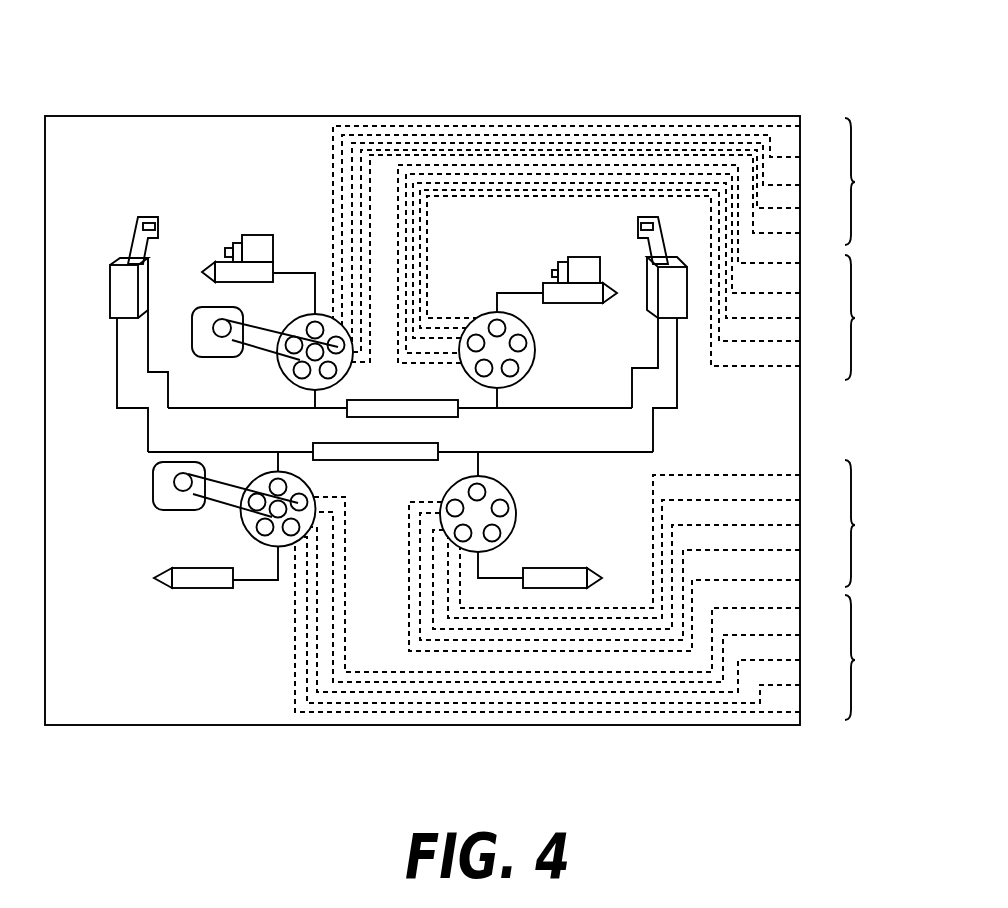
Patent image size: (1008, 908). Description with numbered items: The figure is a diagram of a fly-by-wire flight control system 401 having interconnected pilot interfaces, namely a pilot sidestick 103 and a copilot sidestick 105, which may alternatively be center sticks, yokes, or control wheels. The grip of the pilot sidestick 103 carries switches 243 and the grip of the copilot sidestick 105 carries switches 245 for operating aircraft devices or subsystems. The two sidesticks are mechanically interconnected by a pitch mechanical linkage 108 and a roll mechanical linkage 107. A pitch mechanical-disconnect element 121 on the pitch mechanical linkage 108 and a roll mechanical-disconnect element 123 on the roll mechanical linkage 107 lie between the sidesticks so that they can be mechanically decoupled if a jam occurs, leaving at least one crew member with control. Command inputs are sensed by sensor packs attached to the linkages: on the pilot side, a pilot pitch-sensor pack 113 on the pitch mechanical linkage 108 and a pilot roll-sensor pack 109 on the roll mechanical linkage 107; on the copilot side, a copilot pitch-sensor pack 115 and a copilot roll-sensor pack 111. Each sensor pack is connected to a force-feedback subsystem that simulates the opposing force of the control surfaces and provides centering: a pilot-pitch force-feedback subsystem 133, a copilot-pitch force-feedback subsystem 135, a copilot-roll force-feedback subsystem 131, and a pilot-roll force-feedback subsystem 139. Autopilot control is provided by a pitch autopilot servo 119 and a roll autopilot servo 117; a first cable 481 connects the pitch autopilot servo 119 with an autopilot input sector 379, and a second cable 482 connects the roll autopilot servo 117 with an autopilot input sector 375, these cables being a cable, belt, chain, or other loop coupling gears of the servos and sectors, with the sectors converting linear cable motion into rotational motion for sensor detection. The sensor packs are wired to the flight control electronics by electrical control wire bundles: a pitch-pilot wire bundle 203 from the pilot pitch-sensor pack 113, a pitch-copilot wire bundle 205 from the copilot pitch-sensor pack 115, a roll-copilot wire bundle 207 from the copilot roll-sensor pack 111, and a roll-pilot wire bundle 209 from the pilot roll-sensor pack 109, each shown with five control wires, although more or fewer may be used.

The fly-by-wire flight control system 401 is at (166, 84).
The pilot sidestick 103 is at (138, 242).
The switches 243 is at (150, 218).
The pilot-pitch force-feedback subsystem 133 is at (220, 235).
The pilot pitch-sensor pack 113 is at (333, 320).
The copilot-pitch force-feedback subsystem 135 is at (540, 258).
The switches 245 is at (637, 215).
The copilot sidestick 105 is at (667, 247).
The copilot pitch-sensor pack 115 is at (493, 350).
The pitch mechanical linkage 108 is at (148, 357).
The roll mechanical linkage 107 is at (117, 393).
The first cable 481 is at (248, 353).
The pitch autopilot servo 119 is at (197, 337).
The autopilot input sector 379 is at (312, 358).
The pitch mechanical-disconnect element 121 is at (440, 410).
The roll autopilot servo 117 is at (163, 495).
The second cable 482 is at (218, 503).
The copilot roll-sensor pack 111 is at (487, 508).
The copilot-roll force-feedback subsystem 131 is at (573, 573).
The roll mechanical-disconnect element 123 is at (372, 462).
The pilot-roll force-feedback subsystem 139 is at (185, 580).
The pilot roll-sensor pack 109 is at (278, 548).
The autopilot input sector 375 is at (281, 512).
The pitch-pilot wire bundle 203 is at (855, 182).
The pitch-copilot wire bundle 205 is at (855, 318).
The roll-copilot wire bundle 207 is at (855, 525).
The roll-pilot wire bundle 209 is at (855, 660).